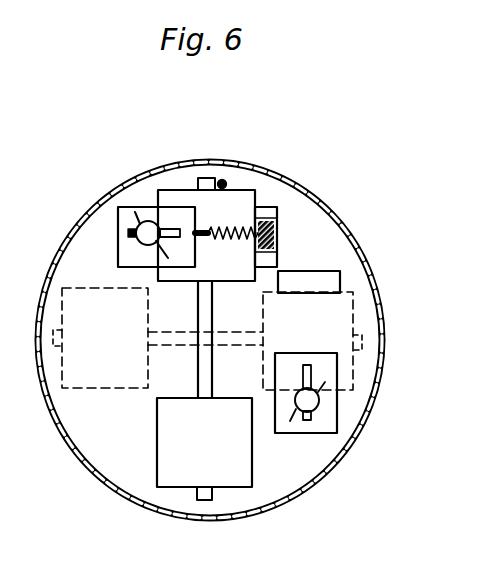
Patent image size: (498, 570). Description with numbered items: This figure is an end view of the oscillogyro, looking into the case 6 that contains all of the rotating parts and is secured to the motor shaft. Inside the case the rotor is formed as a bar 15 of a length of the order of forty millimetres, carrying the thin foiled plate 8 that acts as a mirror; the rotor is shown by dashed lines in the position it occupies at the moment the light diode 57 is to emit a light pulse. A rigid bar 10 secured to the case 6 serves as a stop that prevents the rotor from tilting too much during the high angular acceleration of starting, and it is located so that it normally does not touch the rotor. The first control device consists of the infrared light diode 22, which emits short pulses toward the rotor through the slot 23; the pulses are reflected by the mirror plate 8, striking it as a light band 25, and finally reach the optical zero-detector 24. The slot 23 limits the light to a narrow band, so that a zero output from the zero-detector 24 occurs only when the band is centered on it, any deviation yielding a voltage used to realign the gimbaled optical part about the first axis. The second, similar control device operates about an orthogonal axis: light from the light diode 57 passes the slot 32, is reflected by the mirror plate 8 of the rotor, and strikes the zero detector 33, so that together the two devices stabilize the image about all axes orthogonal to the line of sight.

The case 6 is at (63, 447).
The plate 8 is at (240, 208).
The rigid bar 10 is at (222, 178).
The bar 15 is at (212, 372).
The infrared light diode 22 is at (148, 221).
The slot 23 is at (118, 210).
The optical zero-detector 24 is at (268, 217).
The light band 25 is at (205, 228).
The slot 32 is at (318, 368).
The zero detector 33 is at (315, 282).
The light diode 57 is at (323, 410).